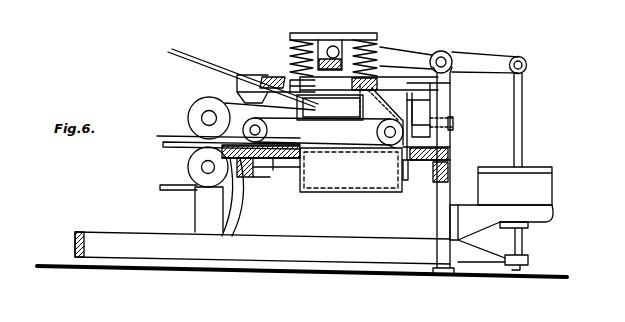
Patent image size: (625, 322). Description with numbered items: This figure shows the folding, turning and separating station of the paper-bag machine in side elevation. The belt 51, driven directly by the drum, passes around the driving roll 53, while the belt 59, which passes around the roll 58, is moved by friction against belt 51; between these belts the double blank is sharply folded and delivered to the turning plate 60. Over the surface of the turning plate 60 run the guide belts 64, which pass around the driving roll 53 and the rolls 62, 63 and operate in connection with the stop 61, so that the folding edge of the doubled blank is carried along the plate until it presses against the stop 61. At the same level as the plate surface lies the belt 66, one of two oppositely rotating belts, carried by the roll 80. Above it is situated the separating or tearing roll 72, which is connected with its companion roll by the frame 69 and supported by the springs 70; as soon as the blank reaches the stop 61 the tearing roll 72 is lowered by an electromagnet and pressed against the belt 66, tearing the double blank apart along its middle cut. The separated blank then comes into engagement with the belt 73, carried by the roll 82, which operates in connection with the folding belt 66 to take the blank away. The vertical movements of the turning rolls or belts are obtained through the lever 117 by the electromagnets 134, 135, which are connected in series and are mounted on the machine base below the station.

The belt 51 is at (194, 70).
The driving roll 53 is at (188, 117).
The roll 58 is at (188, 172).
The belt 59 is at (169, 150).
The turning plate 60 is at (262, 165).
The stop 61 is at (420, 131).
The roll 62 is at (276, 160).
The roll 63 is at (384, 148).
The guide belt 64 is at (238, 95).
The belt 66 is at (362, 195).
The frame 69 is at (289, 36).
The spring 70 is at (290, 62).
The separating or tearing roll 72 is at (330, 107).
The belt 73 is at (382, 102).
The roll 80 is at (408, 182).
The roll 82 is at (407, 108).
The lever 117 is at (484, 77).
The electromagnet 134 is at (529, 232).
The electromagnet 135 is at (490, 166).